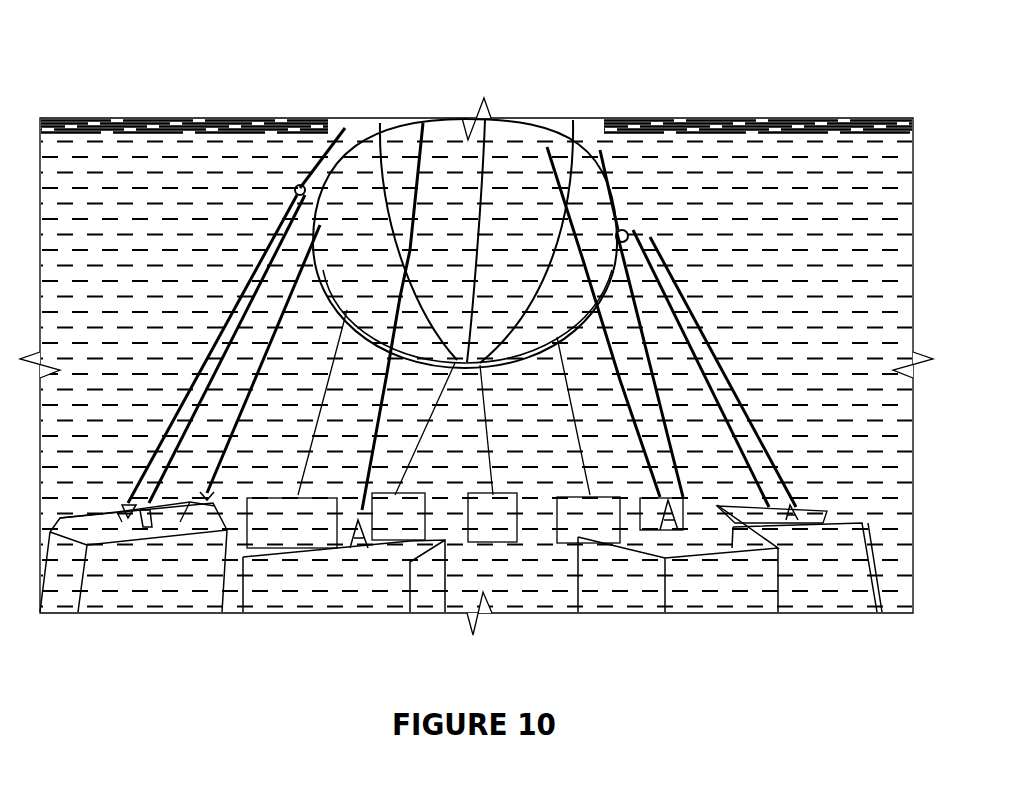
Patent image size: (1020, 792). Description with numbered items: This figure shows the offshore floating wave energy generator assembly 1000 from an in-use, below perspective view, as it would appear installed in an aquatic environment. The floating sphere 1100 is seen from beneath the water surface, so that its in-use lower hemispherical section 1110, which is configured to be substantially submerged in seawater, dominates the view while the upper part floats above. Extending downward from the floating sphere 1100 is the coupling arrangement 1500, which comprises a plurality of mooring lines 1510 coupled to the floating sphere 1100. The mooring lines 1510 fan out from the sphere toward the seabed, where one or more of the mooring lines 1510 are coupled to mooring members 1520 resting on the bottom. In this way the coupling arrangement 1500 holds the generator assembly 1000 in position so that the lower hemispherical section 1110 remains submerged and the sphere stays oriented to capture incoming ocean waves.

The offshore floating wave energy generator assembly 1000 is at (509, 104).
The floating sphere 1100 is at (603, 116).
The lower hemispherical section 1110 is at (620, 232).
The coupling arrangement 1500 is at (268, 232).
The mooring lines 1510 is at (699, 296).
The mooring members 1520 is at (811, 506).